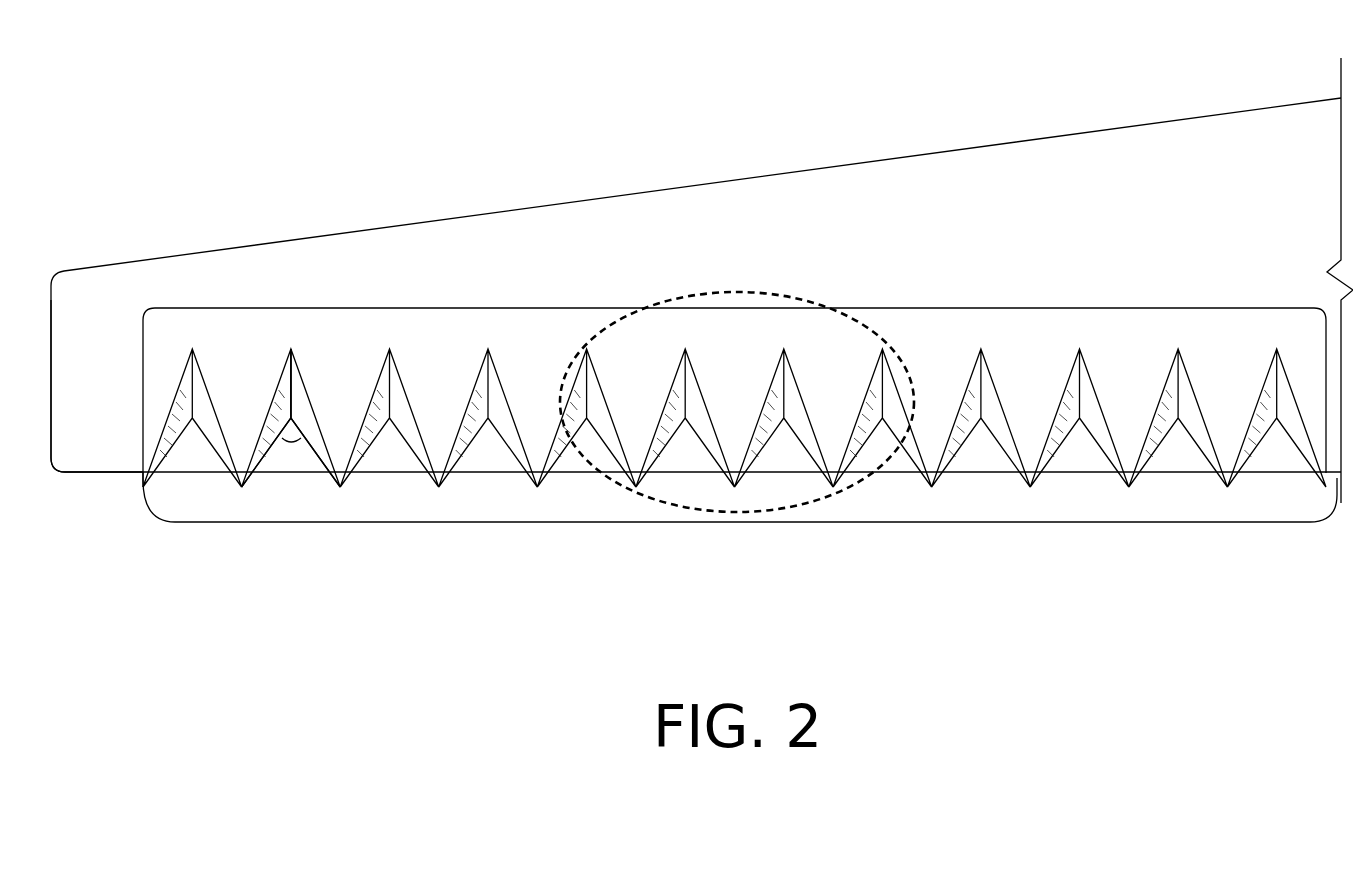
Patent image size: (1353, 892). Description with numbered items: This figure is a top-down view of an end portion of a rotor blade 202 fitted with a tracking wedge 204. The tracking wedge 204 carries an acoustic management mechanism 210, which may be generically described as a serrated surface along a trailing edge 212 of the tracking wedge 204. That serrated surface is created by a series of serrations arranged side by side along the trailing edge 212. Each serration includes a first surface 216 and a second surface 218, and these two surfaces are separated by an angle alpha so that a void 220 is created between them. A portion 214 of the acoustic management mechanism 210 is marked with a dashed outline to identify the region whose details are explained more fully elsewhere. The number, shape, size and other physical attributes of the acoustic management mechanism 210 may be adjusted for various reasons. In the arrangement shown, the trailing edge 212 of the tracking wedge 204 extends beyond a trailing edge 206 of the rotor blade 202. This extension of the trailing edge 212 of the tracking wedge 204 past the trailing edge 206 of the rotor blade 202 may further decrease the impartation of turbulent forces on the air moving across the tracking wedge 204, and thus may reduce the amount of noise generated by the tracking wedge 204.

The rotor blade 202 is at (207, 255).
The tracking wedge 204 is at (597, 308).
The trailing edge of the rotor blade 206 is at (84, 472).
The acoustic management mechanism 210 is at (708, 522).
The trailing edge of the tracking wedge 212 is at (125, 485).
The portion of the acoustic management mechanism 214 is at (785, 292).
The first surface 216 is at (284, 417).
The second surface 218 is at (298, 417).
The void 220 is at (282, 464).